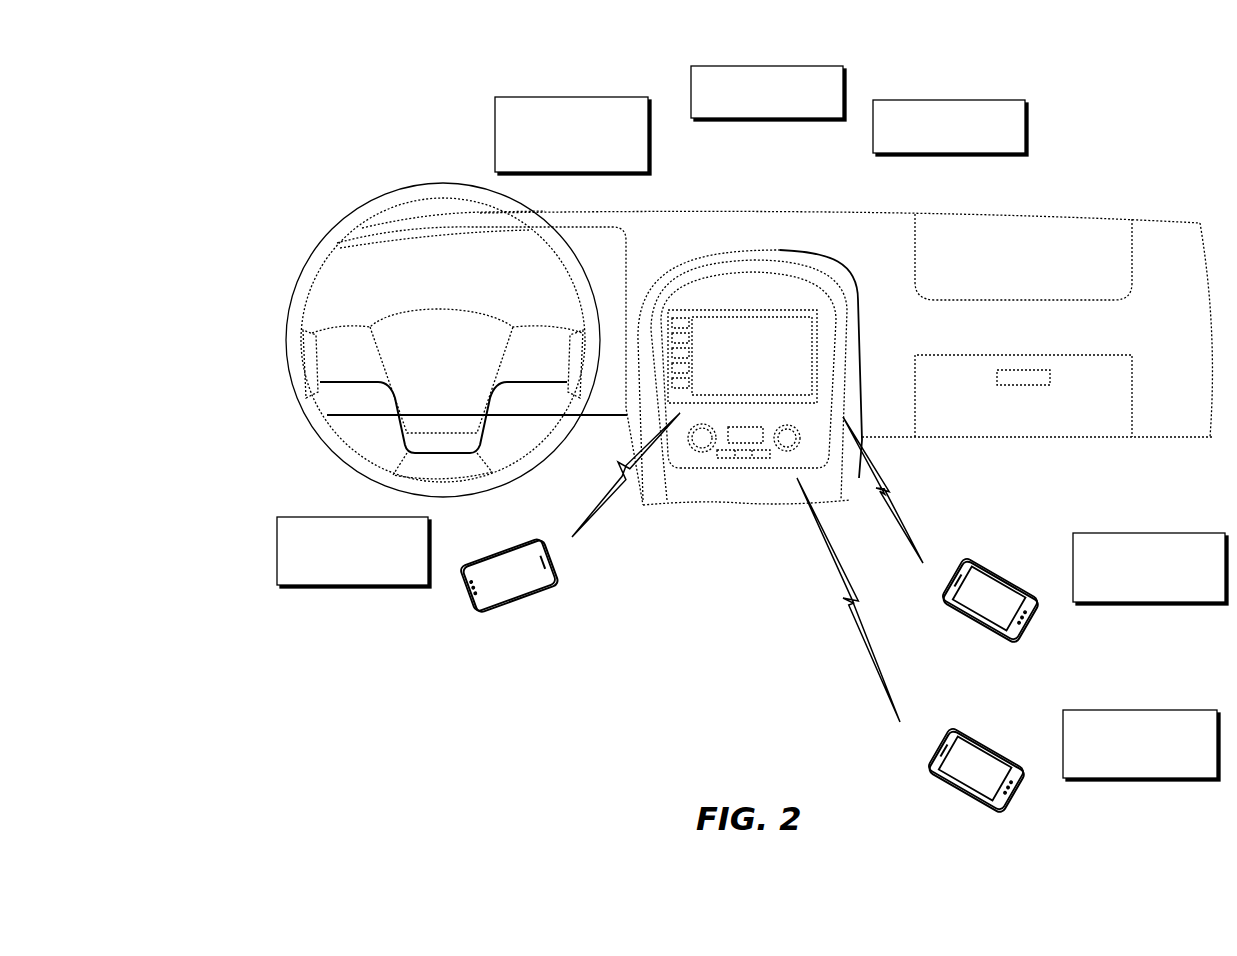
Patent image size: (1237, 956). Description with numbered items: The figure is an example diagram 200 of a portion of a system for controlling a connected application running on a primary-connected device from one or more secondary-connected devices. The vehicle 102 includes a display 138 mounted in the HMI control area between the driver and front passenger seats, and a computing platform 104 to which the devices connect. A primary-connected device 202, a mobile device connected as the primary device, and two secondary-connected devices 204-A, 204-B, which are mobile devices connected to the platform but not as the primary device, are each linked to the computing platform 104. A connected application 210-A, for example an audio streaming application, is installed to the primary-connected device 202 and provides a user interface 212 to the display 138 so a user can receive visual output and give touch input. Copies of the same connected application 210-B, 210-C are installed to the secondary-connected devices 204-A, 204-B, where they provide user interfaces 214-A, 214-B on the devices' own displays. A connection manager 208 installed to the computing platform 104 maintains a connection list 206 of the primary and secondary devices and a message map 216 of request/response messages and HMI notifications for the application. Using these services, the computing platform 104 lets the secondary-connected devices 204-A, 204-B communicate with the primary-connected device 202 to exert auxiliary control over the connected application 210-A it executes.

The example diagram 200 is at (292, 86).
The vehicle 102 is at (1150, 223).
The computing platform 104 is at (817, 328).
The display 138 is at (742, 356).
The user interface 212 is at (802, 358).
The primary-connected device 202 is at (525, 540).
The secondary-connected device 204-A is at (978, 562).
The secondary-connected device 204-B is at (975, 737).
The user interface 214-A is at (978, 604).
The user interface 214-B is at (970, 778).
The connection list 206 is at (785, 310).
The connection manager 208 is at (695, 310).
The message map 216 is at (735, 310).
The connected application 210-A is at (460, 580).
The connected application 210-B is at (1040, 602).
The connected application 210-C is at (1020, 778).